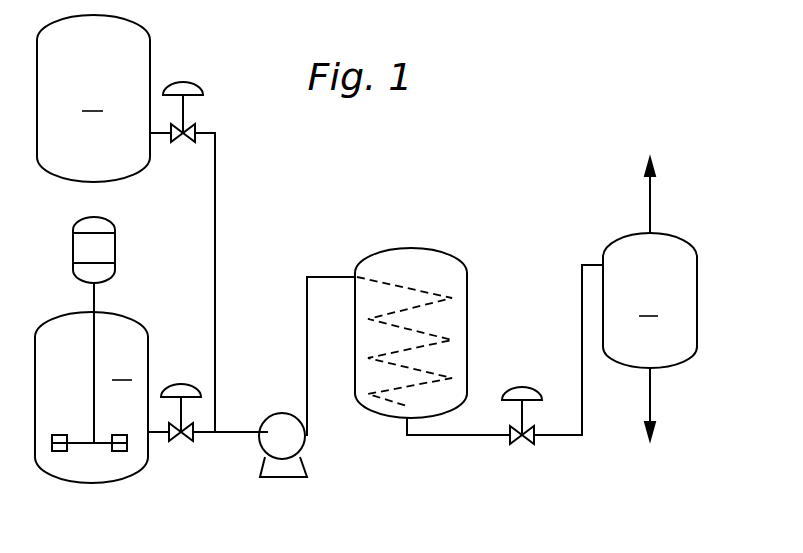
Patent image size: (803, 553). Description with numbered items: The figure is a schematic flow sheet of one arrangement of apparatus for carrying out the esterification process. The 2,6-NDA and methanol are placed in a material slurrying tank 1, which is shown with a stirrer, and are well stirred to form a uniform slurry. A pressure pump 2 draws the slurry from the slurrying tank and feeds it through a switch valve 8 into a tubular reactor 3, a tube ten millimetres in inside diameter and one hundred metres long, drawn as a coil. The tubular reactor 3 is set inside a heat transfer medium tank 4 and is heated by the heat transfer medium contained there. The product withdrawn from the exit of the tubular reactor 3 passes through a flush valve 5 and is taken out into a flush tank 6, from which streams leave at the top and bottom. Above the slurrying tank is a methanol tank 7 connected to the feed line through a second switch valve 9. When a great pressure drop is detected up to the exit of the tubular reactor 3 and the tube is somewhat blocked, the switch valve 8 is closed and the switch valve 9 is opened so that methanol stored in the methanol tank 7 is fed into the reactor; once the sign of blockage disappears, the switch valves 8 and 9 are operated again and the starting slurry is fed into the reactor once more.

The material slurrying tank 1 is at (91, 350).
The pressure pump 2 is at (290, 473).
The tubular reactor 3 is at (424, 292).
The heat transfer medium tank 4 is at (455, 262).
The flush valve 5 is at (527, 396).
The flush tank 6 is at (650, 299).
The methanol tank 7 is at (93, 98).
The switch valve 8 is at (190, 394).
The switch valve 9 is at (191, 90).